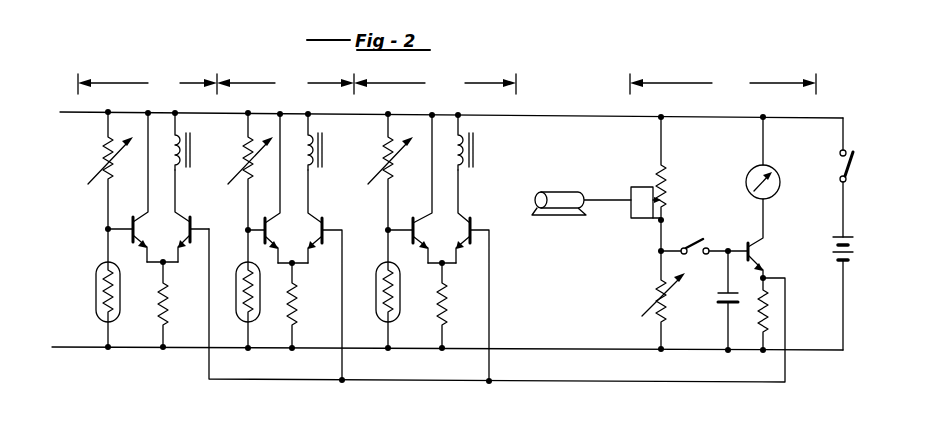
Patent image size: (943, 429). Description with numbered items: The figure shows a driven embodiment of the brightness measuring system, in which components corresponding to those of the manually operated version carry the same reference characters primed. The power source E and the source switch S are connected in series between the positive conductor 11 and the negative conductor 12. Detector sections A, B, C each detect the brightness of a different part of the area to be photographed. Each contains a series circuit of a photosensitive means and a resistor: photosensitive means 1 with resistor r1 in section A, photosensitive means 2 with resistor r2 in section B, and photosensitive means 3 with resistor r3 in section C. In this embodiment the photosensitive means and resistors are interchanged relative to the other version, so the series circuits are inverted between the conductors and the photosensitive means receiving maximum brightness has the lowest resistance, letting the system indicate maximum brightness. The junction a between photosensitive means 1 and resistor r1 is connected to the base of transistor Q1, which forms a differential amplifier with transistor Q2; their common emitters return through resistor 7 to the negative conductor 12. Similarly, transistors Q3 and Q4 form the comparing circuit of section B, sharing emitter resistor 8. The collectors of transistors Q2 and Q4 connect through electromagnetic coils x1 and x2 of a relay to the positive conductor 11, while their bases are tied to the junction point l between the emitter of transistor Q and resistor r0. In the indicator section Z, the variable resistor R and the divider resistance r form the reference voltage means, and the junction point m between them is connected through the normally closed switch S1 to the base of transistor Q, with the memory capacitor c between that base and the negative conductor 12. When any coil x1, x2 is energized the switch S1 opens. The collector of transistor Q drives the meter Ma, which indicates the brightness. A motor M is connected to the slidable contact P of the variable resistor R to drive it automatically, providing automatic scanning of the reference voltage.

The detector circuit section A is at (147, 84).
The detector circuit section B is at (285, 84).
The detector circuit section C is at (435, 84).
The indicator section Z is at (723, 85).
The positive conductor 11 is at (579, 112).
The negative conductor 12 is at (540, 348).
The resistor r1 is at (98, 164).
The resistor r2 is at (241, 171).
The resistor r3 is at (385, 172).
The electromagnetic coil x1 is at (182, 130).
The electromagnetic coil x2 is at (326, 150).
The junction a is at (100, 227).
The photosensitive means 1 is at (95, 282).
The photosensitive means 2 is at (238, 312).
The photosensitive means 3 is at (378, 312).
The transistor Q1 is at (142, 246).
The transistor Q2 is at (188, 246).
The transistor Q3 is at (274, 245).
The transistor Q4 is at (321, 219).
The resistor 7 is at (166, 304).
The resistor 8 is at (297, 305).
The motor M is at (581, 192).
The slidable contact P is at (643, 193).
The variable resistor R is at (668, 186).
The junction point m is at (658, 251).
The divider resistance r is at (659, 284).
The normally closed switch S1 is at (696, 236).
The memory capacitor c is at (717, 300).
The transistor Q is at (763, 238).
The junction point l is at (768, 272).
The resistor r0 is at (751, 314).
The meter Ma is at (778, 168).
The source switch S is at (850, 172).
The power source E is at (855, 253).